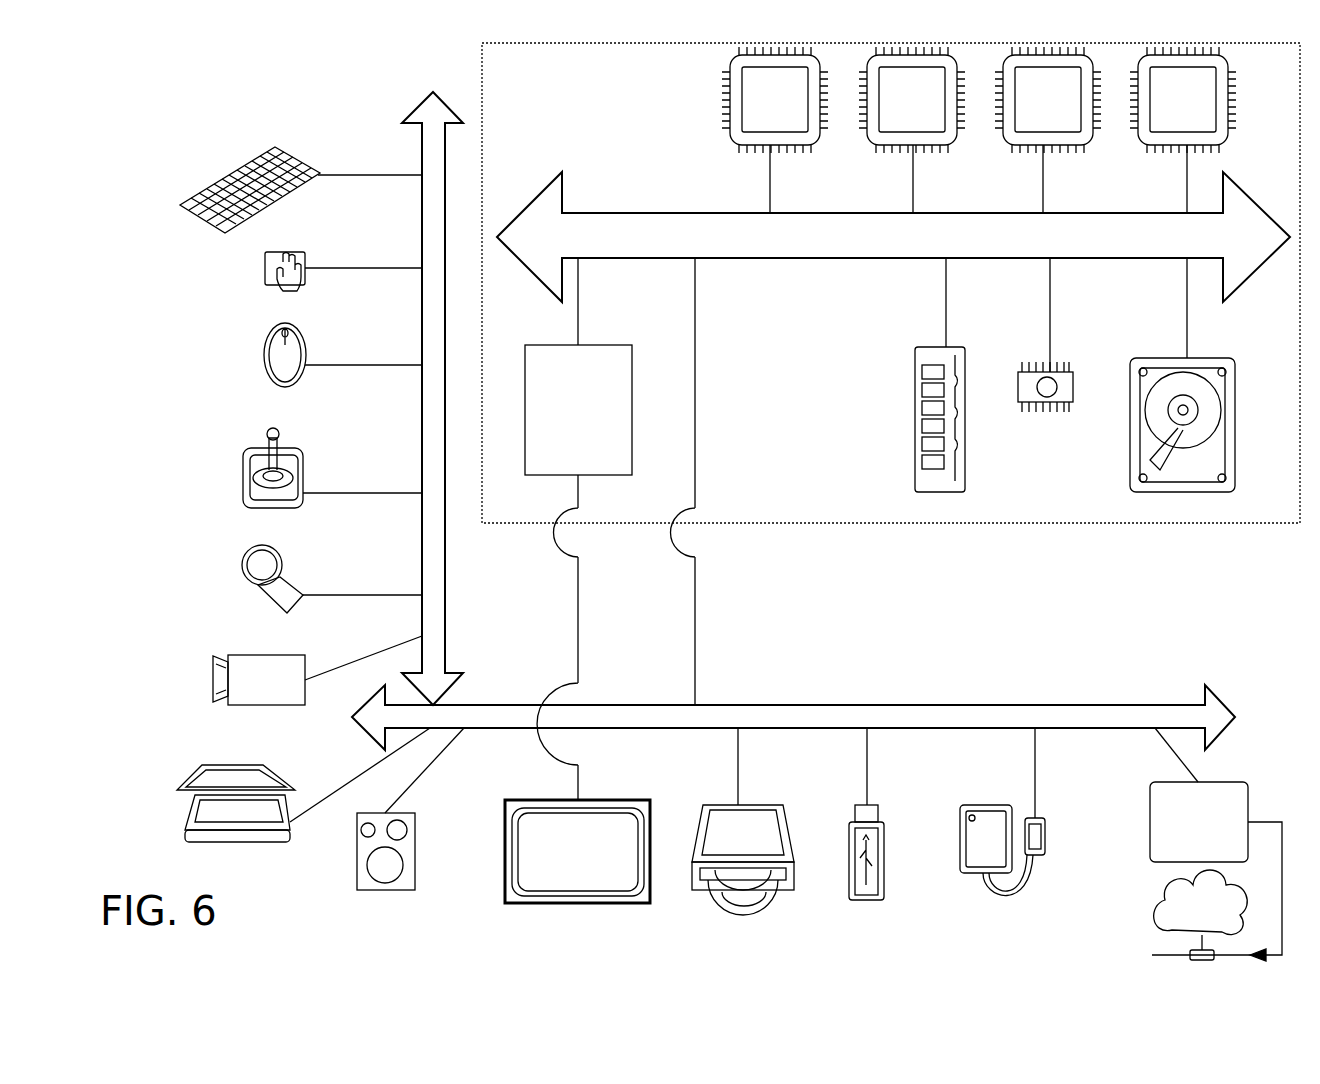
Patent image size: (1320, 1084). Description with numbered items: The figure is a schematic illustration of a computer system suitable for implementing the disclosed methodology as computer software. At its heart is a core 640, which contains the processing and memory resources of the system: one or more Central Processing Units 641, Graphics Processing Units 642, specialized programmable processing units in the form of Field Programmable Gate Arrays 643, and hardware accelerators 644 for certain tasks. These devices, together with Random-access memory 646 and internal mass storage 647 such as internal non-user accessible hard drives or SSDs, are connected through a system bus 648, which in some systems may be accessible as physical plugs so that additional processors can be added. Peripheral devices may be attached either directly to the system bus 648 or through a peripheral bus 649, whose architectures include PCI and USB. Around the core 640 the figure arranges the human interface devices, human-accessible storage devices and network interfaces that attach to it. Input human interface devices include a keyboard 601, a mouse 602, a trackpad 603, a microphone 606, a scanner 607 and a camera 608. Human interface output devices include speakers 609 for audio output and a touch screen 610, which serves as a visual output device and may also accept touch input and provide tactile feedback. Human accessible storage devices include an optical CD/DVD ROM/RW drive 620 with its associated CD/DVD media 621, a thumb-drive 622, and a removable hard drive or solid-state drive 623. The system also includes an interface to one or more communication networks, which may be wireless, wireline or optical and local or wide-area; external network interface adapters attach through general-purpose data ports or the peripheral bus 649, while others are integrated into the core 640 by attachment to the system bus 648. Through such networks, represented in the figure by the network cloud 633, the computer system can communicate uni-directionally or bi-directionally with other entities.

The keyboard 601 is at (180, 203).
The mouse 602 is at (255, 358).
The trackpad 603 is at (255, 278).
The microphone 606 is at (243, 566).
The scanner 607 is at (180, 822).
The camera 608 is at (215, 680).
The speakers 609 is at (385, 890).
The touch screen 610 is at (575, 905).
The CD/DVD ROM/RW 620 is at (785, 885).
The CD/DVD media 621 is at (722, 895).
The thumb-drive 622 is at (860, 905).
The removable hard drive or solid-state drive 623 is at (965, 877).
The network cloud 633 is at (1152, 925).
The core 640 is at (885, 523).
The Central Processing Unit 641 is at (775, 130).
The Graphics Processing Unit 642 is at (912, 130).
The Field Programmable Gate Array 643 is at (1042, 445).
The hardware accelerator 644 is at (1206, 504).
The Random-access memory 646 is at (915, 430).
The internal mass storage 647 is at (1148, 360).
The system bus 648 is at (893, 237).
The peripheral bus 649 is at (422, 128).